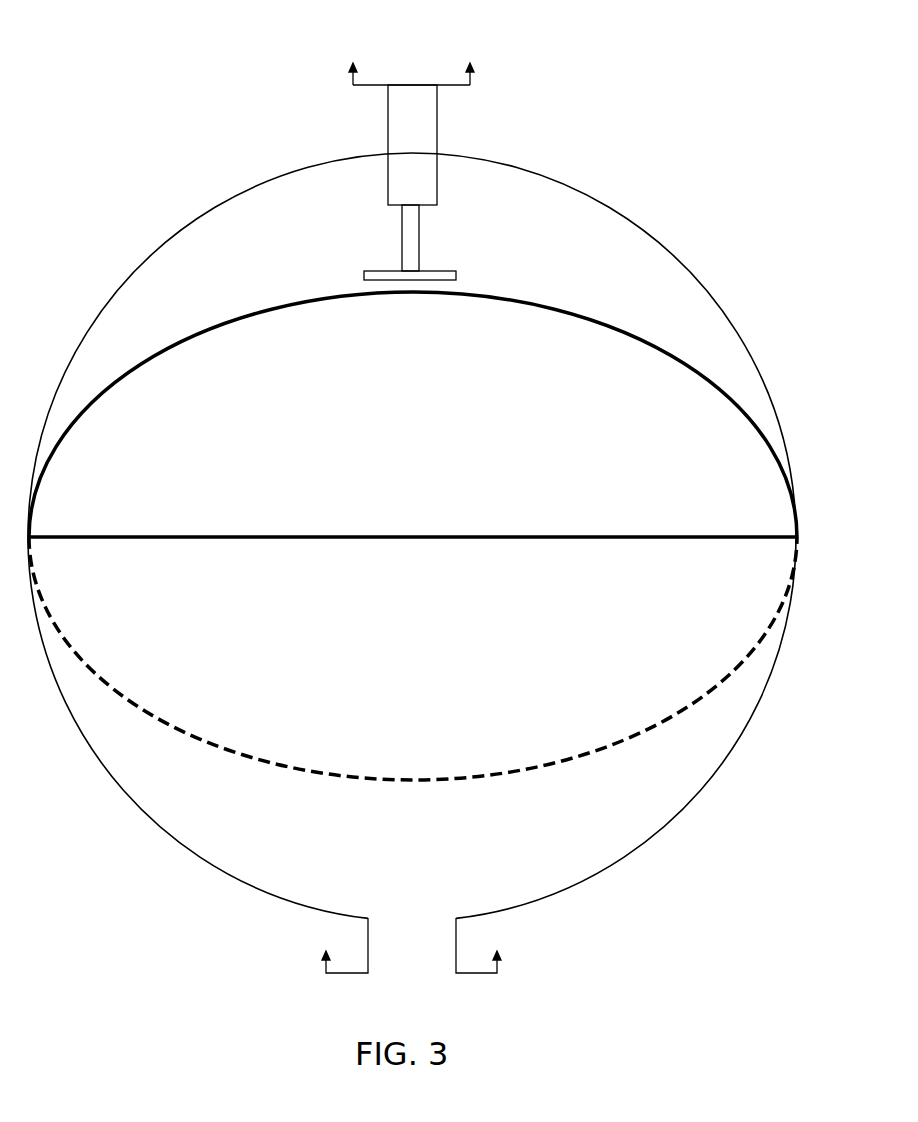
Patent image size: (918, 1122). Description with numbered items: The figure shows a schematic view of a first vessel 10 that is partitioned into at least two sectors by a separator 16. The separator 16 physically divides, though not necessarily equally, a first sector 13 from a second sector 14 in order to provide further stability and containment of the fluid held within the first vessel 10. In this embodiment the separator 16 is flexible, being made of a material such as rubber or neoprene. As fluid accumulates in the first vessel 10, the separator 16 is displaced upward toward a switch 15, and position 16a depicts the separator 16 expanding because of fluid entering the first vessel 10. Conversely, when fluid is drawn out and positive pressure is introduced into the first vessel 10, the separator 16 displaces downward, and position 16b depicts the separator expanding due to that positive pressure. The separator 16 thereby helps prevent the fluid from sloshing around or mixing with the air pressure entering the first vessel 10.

The first vessel 10 is at (127, 146).
The first sector 13 is at (635, 275).
The second sector 14 is at (210, 813).
The switch 15 is at (413, 192).
The separator 16 is at (768, 535).
The position 16a is at (183, 338).
The position 16b is at (168, 725).